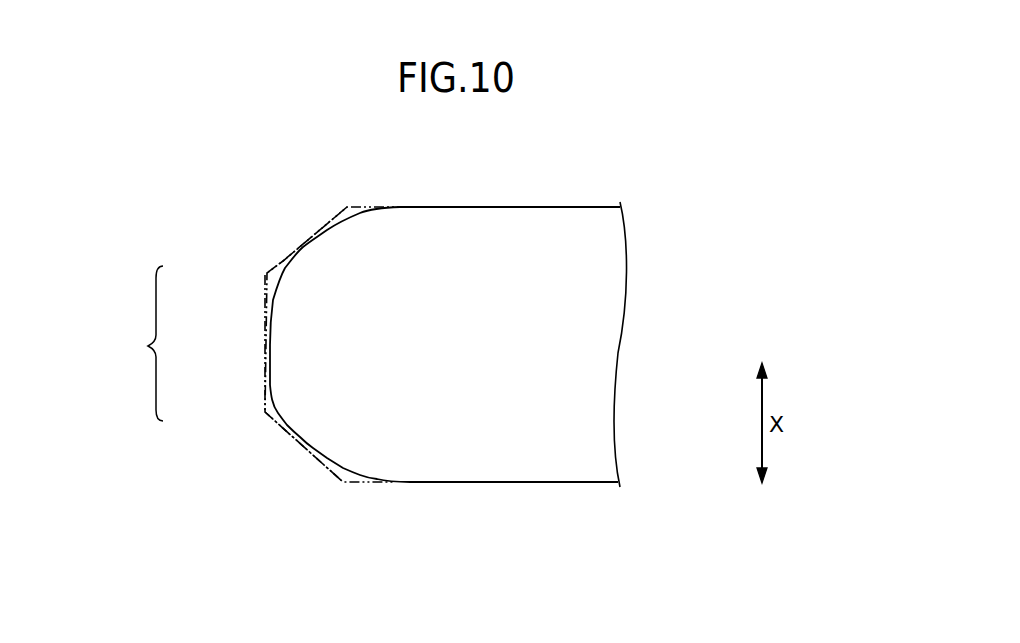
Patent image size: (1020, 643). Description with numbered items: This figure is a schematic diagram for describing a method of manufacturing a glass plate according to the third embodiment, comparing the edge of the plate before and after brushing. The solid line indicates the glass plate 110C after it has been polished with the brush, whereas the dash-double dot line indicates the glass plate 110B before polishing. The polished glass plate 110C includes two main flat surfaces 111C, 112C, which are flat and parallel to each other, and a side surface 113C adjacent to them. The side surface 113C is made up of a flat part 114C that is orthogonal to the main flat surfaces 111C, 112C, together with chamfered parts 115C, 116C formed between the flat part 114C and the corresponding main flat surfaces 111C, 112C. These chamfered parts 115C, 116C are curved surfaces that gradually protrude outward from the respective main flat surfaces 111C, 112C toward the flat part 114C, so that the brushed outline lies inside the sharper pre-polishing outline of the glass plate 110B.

The glass plate 110C is at (602, 350).
The main flat surface 111C is at (460, 207).
The main flat surface 112C is at (460, 483).
The side surface 113C is at (127, 343).
The flat part 114C is at (270, 338).
The chamfered part 115C is at (282, 265).
The chamfered part 116C is at (285, 426).
The glass plate 110B is at (322, 462).